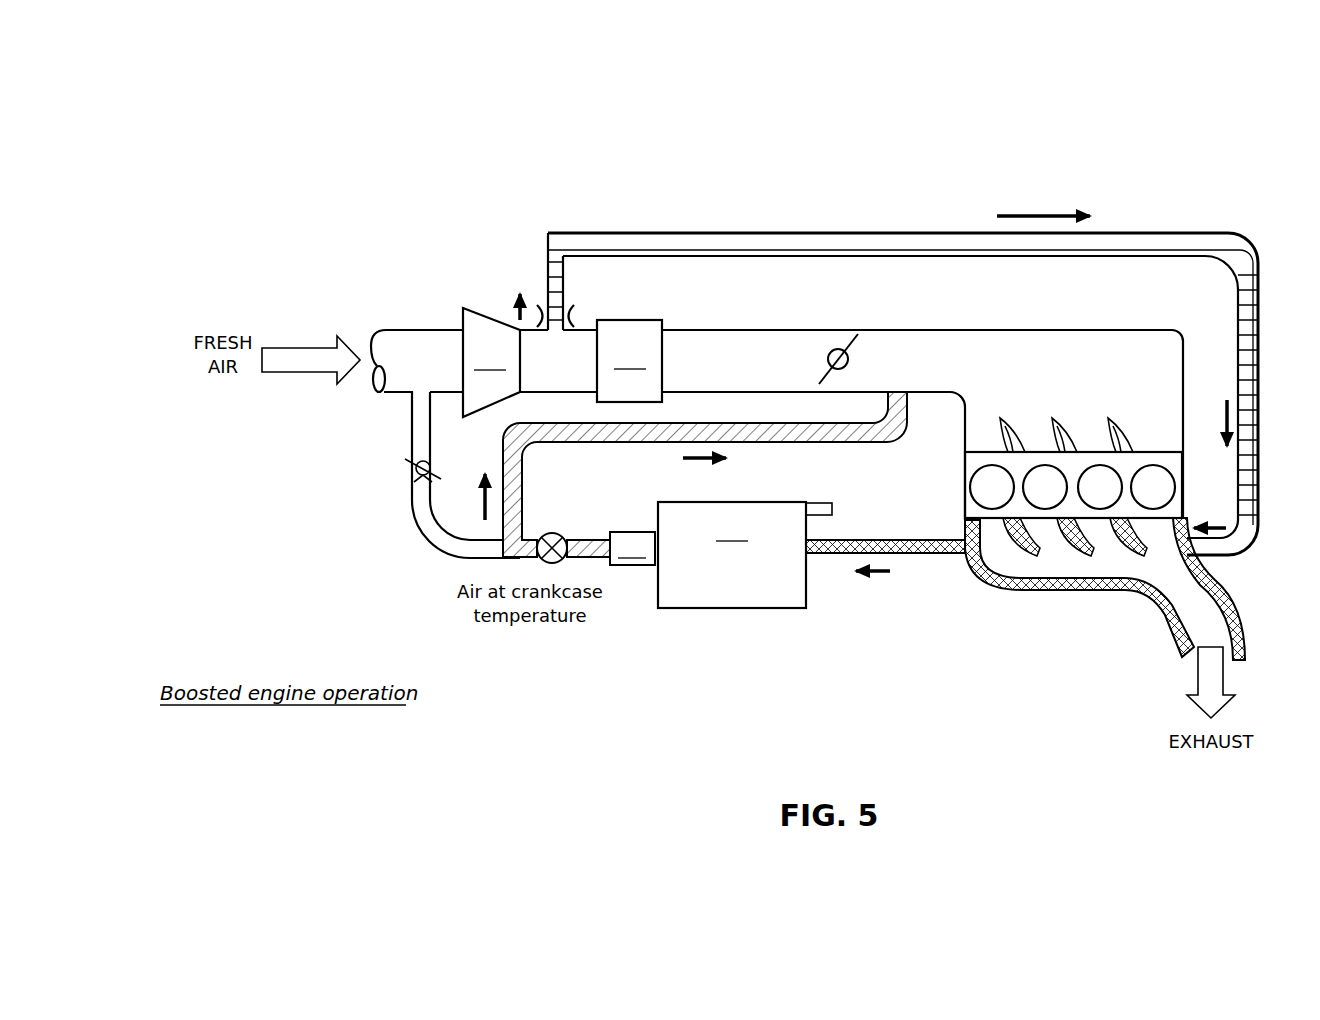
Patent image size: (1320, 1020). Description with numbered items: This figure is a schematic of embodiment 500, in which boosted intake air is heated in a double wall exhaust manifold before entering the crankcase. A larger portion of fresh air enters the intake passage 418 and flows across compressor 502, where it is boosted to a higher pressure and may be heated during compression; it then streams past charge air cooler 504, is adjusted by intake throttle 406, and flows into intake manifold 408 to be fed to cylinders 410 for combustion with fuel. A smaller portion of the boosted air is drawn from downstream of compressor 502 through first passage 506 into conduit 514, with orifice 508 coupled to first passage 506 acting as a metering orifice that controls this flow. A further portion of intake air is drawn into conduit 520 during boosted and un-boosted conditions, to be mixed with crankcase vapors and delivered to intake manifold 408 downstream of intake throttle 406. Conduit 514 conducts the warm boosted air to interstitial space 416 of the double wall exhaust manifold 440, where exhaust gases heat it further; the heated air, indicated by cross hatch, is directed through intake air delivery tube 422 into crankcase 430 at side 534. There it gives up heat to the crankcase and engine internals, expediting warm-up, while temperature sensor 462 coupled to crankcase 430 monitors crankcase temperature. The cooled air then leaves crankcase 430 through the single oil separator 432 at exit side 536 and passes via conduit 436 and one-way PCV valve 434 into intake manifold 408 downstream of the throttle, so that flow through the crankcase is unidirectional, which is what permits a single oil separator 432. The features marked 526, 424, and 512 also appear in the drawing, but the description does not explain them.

The embodiment 500 is at (208, 122).
The compressor 502 is at (491, 362).
The charge air cooler 504 is at (629, 361).
The first passage 506 is at (563, 297).
The orifice (aspirator) 508 is at (572, 318).
The conduit 514 is at (803, 232).
The conduit 520 is at (408, 322).
The junction 526 is at (555, 218).
The intake throttle 406 is at (828, 361).
The intake manifold 408 is at (1186, 381).
The cylinders 410 is at (1043, 447).
The interstitial space 416 is at (1081, 589).
The intake passage 418 is at (406, 387).
The intake air delivery tube 422 is at (948, 556).
The exhaust passage 424 is at (1018, 604).
The crankcase 430 is at (732, 555).
The oil separator 432 is at (632, 548).
The PCV valve 434 is at (870, 447).
The conduit 436 is at (522, 477).
The double wall exhaust manifold 440 is at (1240, 613).
The temperature sensor 462 is at (818, 503).
The valve 512 is at (418, 474).
The side 534 is at (813, 573).
The exit side 536 is at (650, 575).